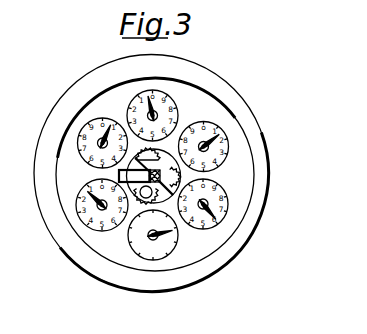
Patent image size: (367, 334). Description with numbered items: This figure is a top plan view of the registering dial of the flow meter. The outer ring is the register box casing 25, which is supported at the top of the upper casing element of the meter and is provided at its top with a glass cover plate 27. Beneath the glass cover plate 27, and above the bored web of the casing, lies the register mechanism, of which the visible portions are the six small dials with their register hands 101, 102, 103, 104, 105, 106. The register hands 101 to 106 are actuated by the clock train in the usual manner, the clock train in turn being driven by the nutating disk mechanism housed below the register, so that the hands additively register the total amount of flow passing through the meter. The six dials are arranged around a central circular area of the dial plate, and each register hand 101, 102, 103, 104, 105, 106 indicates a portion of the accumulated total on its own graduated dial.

The register box casing 25 is at (256, 205).
The glass cover plate 27 is at (237, 158).
The register hand 101 is at (86, 190).
The register hand 102 is at (89, 156).
The register hand 103 is at (141, 102).
The register hand 104 is at (220, 135).
The register hand 105 is at (208, 203).
The register hand 106 is at (174, 231).